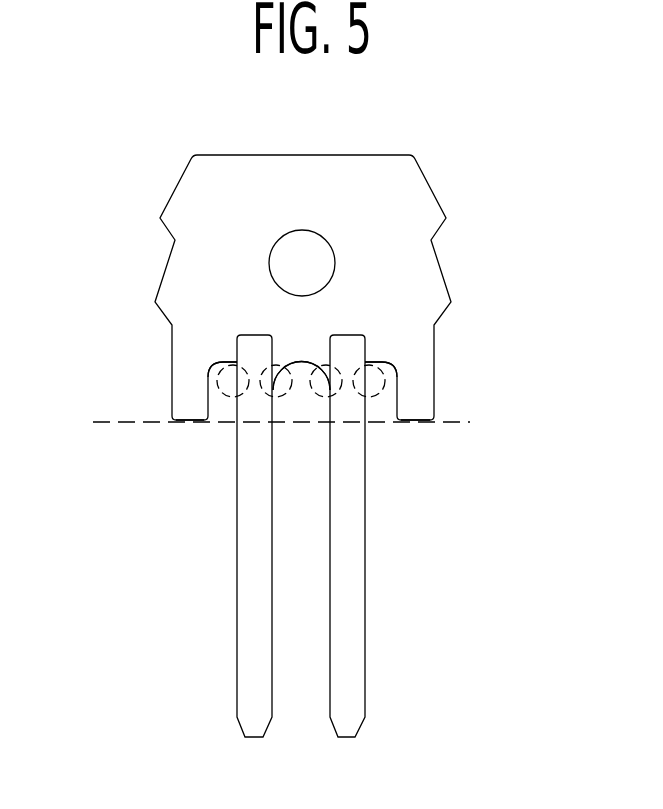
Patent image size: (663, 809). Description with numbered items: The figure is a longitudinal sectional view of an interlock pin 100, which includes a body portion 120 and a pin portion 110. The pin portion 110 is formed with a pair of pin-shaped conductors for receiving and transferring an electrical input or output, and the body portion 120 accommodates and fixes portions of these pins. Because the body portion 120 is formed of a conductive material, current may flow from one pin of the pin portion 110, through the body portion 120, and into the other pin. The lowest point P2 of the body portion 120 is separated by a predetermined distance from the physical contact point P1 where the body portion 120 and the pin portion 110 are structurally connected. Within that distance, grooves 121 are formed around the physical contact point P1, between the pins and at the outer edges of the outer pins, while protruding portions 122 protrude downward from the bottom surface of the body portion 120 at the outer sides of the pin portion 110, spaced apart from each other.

The interlock pin 100 is at (448, 122).
The body portion 120 is at (440, 272).
The grooves 121 is at (397, 393).
The protruding portions 122 is at (188, 422).
The pin portion 110 is at (272, 537).
The physical contact point P1 is at (357, 370).
The lowest point of the body portion P2 is at (261, 421).